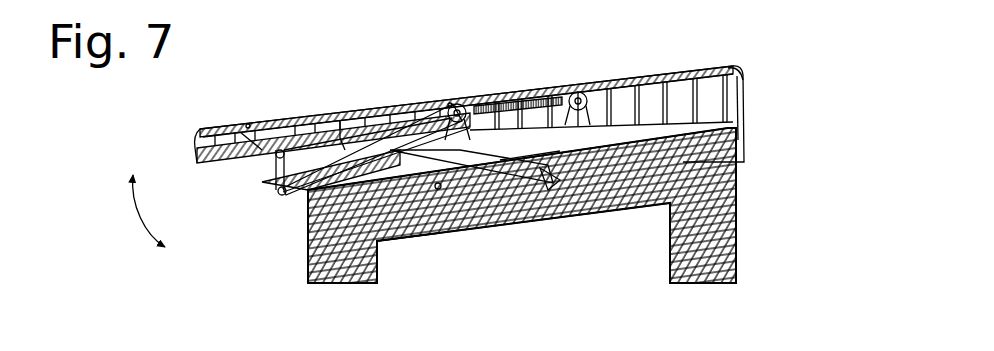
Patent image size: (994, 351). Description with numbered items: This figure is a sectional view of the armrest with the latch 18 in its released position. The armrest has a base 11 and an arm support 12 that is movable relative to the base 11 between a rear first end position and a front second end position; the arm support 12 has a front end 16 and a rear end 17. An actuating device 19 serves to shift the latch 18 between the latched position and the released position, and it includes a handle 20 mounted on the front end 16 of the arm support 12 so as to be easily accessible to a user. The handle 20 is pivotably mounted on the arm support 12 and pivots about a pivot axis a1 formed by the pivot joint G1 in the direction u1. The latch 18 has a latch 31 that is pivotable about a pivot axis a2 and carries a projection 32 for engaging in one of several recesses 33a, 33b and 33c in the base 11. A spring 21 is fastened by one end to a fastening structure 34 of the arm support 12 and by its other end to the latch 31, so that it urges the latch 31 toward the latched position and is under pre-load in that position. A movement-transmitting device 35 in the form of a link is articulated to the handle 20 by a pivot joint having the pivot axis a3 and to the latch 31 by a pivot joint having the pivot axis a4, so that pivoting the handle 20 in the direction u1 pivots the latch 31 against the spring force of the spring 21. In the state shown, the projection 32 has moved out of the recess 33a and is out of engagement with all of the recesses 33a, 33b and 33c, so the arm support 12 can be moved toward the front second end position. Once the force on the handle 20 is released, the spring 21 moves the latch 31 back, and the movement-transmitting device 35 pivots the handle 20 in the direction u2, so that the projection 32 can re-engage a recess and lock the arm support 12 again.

The base 11 is at (310, 258).
The arm support 12 is at (740, 105).
The front end 16 is at (196, 132).
The rear end 17 is at (745, 64).
The latch 18 is at (575, 95).
The actuating device 19 is at (337, 134).
The handle 20 is at (197, 164).
The spring 21 is at (536, 98).
The latch 31 is at (468, 106).
The projection 32 is at (545, 172).
The recess 33a is at (524, 170).
The recess 33b is at (398, 243).
The recess 33c is at (308, 200).
The fastening structure 34 is at (594, 84).
The movement-transmitting device 35 is at (397, 120).
The pivot axis a1 is at (285, 136).
The pivot axis a2 is at (440, 196).
The pivot axis a3 is at (276, 195).
The pivot axis a4 is at (446, 100).
The pivot joint G1 is at (248, 125).
The direction u1 is at (133, 208).
The direction u2 is at (142, 265).